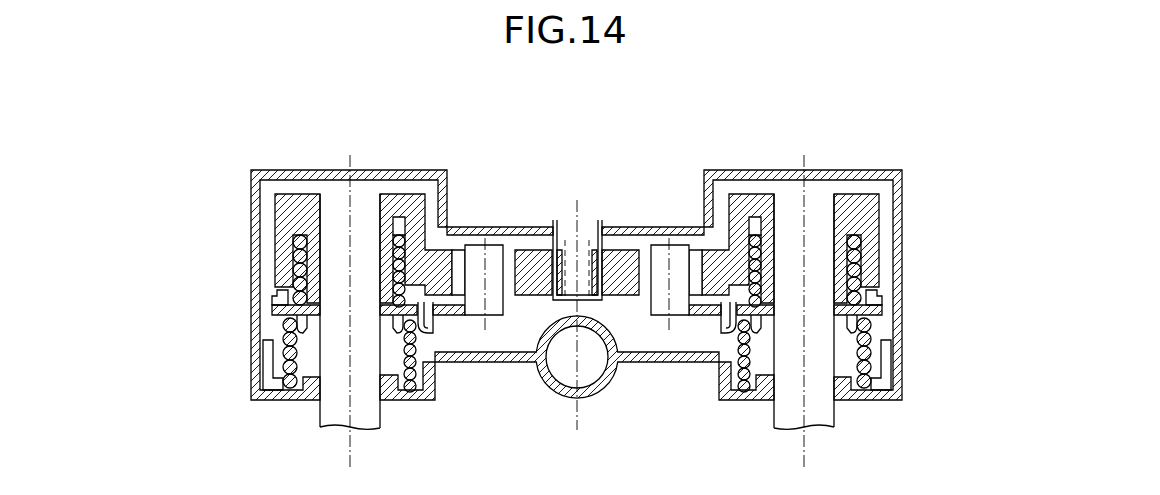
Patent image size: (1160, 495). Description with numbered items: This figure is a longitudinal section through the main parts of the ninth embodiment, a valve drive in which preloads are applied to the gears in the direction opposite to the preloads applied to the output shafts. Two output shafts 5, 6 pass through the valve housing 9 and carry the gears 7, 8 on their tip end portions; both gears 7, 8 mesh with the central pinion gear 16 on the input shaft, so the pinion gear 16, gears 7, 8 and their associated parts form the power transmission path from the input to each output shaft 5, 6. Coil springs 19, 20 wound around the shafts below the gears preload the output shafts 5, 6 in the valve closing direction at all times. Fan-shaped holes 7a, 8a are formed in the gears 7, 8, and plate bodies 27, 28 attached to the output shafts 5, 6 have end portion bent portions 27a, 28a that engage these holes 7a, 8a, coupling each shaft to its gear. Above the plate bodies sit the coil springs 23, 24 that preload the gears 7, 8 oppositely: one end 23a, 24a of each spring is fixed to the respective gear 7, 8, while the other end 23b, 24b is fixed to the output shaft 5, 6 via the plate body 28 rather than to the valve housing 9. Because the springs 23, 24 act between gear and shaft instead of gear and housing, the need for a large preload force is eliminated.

The output shaft 5 is at (330, 407).
The output shaft 6 is at (822, 410).
The gear 7 is at (400, 213).
The fan-shaped hole 7a is at (463, 262).
The gear 8 is at (850, 212).
The fan-shaped hole 8a is at (643, 258).
The valve housing 9 is at (250, 200).
The pinion gear 16 is at (583, 222).
The coil spring 19 is at (283, 352).
The coil spring 20 is at (870, 362).
The coil spring 23 is at (300, 233).
The one end of coil spring 23a is at (402, 225).
The other end of coil spring 23b is at (273, 302).
The coil spring 24 is at (862, 252).
The one end of coil spring 24a is at (755, 225).
The other end of coil spring 24b is at (878, 295).
The plate body 27 is at (273, 310).
The end portion bent portion 27a is at (475, 308).
The plate body 28 is at (880, 312).
The end portion bent portion 28a is at (658, 303).